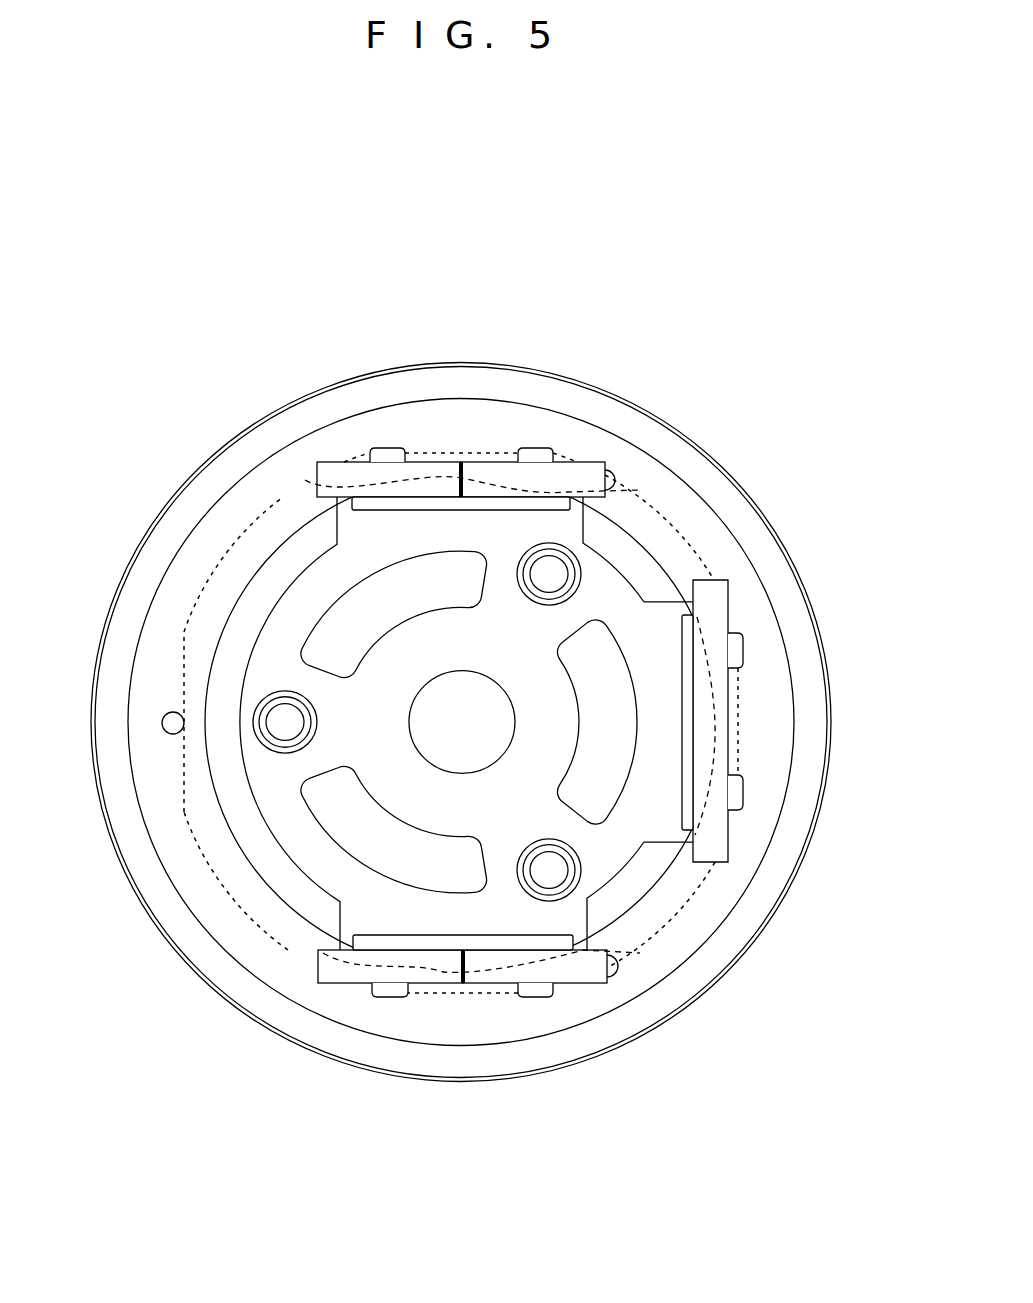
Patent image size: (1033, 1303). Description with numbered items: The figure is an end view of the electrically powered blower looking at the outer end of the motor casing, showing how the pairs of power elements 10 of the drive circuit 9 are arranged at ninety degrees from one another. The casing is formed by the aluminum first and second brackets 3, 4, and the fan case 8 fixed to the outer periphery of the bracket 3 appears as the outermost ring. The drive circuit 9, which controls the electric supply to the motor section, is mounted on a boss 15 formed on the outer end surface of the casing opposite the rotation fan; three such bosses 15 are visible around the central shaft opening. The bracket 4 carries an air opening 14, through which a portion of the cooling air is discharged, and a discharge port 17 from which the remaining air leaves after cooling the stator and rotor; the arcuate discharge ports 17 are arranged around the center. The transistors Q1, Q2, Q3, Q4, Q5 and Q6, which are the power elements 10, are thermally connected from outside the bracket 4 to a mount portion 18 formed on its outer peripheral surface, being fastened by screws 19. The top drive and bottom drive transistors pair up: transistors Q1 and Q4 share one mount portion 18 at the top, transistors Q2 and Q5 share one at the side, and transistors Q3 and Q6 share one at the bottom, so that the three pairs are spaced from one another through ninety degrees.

The first bracket 3 is at (205, 483).
The second bracket 4 is at (350, 530).
The fan case 8 is at (140, 545).
The drive circuit 9 is at (685, 525).
The power elements 10 is at (527, 348).
The air opening 14 is at (474, 475).
The boss 15 is at (573, 548).
The discharge port 17 is at (322, 825).
The mount portion 18 is at (431, 497).
The screws 19 is at (390, 448).
The transistor Q1 is at (348, 478).
The transistor Q2 is at (713, 605).
The transistor Q3 is at (587, 968).
The transistor Q4 is at (500, 468).
The transistor Q5 is at (713, 833).
The transistor Q6 is at (345, 965).